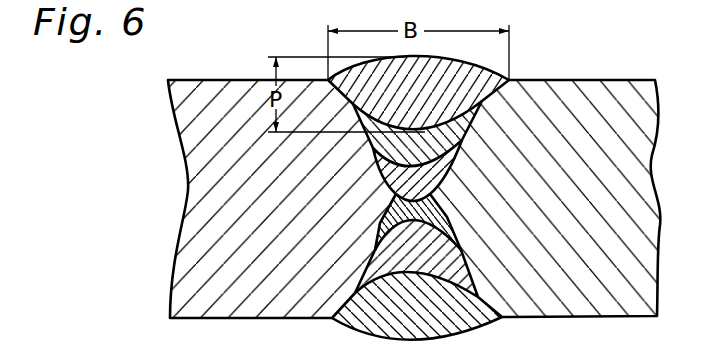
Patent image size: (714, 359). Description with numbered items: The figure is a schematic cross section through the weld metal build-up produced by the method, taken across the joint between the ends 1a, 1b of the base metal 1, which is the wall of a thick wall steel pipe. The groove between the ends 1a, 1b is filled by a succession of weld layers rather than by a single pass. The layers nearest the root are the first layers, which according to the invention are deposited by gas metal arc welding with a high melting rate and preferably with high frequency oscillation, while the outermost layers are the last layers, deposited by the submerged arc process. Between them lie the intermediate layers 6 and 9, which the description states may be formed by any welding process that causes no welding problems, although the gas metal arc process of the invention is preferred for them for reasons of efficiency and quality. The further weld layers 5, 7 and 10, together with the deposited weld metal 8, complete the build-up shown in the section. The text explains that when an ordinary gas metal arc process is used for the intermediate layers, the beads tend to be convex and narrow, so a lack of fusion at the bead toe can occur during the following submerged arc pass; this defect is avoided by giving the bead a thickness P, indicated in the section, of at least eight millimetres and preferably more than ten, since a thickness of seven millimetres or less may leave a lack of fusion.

The base metal 1 is at (414, 170).
The end of the base metal 1a is at (219, 86).
The end of the base metal 1b is at (612, 84).
The weld pass (root side layer) 5 is at (431, 218).
The intermediate layer 6 is at (456, 259).
The bottom weld bead (back side final pass) 7 is at (458, 327).
The deposited metal 8 is at (445, 174).
The intermediate layer 9 is at (457, 133).
The top weld bead (face side final pass) 10 is at (482, 86).